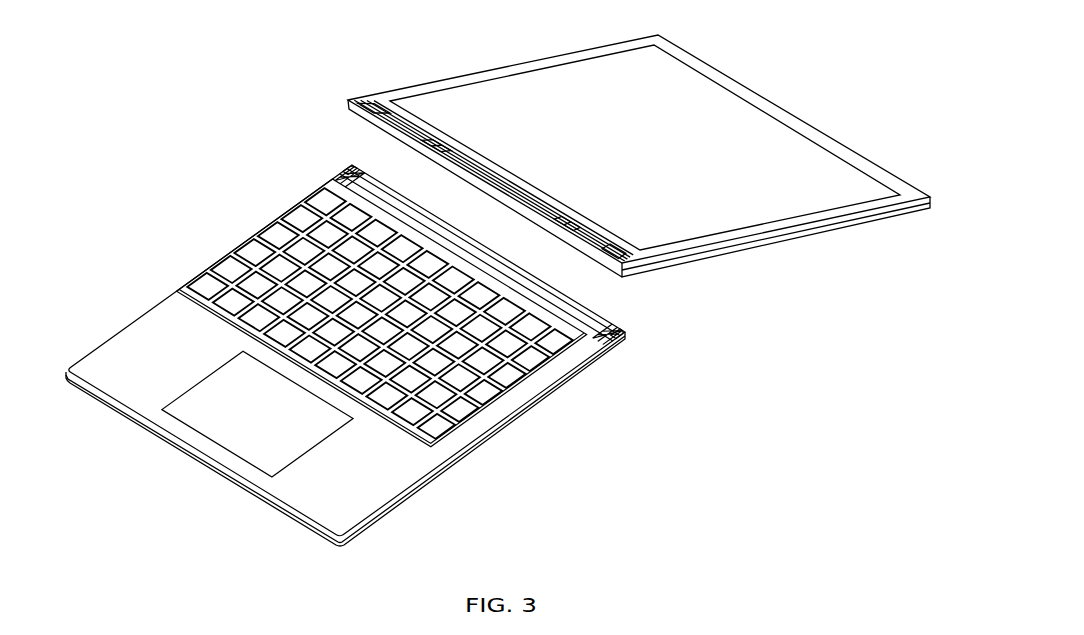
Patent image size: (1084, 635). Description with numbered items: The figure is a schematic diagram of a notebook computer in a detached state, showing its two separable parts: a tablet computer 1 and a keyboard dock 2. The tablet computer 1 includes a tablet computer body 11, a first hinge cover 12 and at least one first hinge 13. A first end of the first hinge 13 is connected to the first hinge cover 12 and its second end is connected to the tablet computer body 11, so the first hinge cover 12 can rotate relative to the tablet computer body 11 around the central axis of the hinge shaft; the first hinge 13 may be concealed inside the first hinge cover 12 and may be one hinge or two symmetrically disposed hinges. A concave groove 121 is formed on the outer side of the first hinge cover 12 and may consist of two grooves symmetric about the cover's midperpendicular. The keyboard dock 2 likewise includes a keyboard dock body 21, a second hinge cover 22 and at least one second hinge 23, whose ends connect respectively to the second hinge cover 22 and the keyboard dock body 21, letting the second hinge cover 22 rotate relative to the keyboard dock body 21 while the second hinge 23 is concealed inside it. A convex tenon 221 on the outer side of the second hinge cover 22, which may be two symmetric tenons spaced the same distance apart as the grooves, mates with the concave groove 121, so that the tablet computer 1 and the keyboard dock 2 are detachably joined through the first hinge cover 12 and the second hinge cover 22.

The tablet computer 1 is at (607, 97).
The tablet computer body 11 is at (352, 97).
The first hinge cover 12 is at (487, 187).
The concave groove 121 is at (425, 132).
The first hinge 13 is at (402, 112).
The keyboard dock 2 is at (215, 342).
The keyboard dock body 21 is at (352, 155).
The second hinge cover 22 is at (458, 250).
The convex tenon 221 is at (325, 183).
The second hinge 23 is at (330, 163).